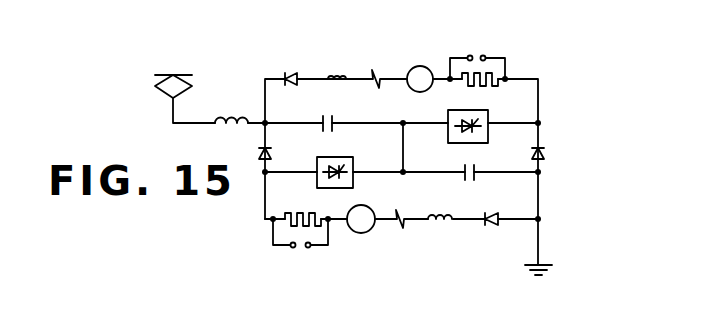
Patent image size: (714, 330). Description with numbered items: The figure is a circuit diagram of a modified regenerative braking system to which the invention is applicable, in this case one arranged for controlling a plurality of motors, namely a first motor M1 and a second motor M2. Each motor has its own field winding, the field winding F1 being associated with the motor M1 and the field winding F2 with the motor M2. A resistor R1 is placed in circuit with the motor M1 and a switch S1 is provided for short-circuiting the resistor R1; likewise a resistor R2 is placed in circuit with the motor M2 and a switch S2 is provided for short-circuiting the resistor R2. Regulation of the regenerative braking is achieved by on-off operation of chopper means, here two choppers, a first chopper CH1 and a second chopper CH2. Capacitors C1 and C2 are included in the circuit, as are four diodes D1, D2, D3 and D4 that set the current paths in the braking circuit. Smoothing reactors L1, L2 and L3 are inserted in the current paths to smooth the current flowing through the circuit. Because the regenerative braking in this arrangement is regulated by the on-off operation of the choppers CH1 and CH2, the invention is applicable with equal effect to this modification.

The smoothing reactor L1 is at (247, 113).
The diode D1 is at (291, 71).
The smoothing reactor L2 is at (330, 75).
The field winding F1 is at (377, 71).
The motor M1 is at (421, 66).
The switch S1 is at (468, 55).
The resistor R1 is at (486, 89).
The capacitor C1 is at (326, 101).
The chopper CH1 is at (448, 112).
The chopper CH2 is at (364, 157).
The diode D3 is at (260, 156).
The diode D2 is at (543, 156).
The capacitor C2 is at (476, 167).
The resistor R2 is at (290, 213).
The switch S2 is at (290, 248).
The motor M2 is at (357, 234).
The field winding F2 is at (397, 226).
The smoothing reactor L3 is at (445, 224).
The diode D4 is at (490, 227).